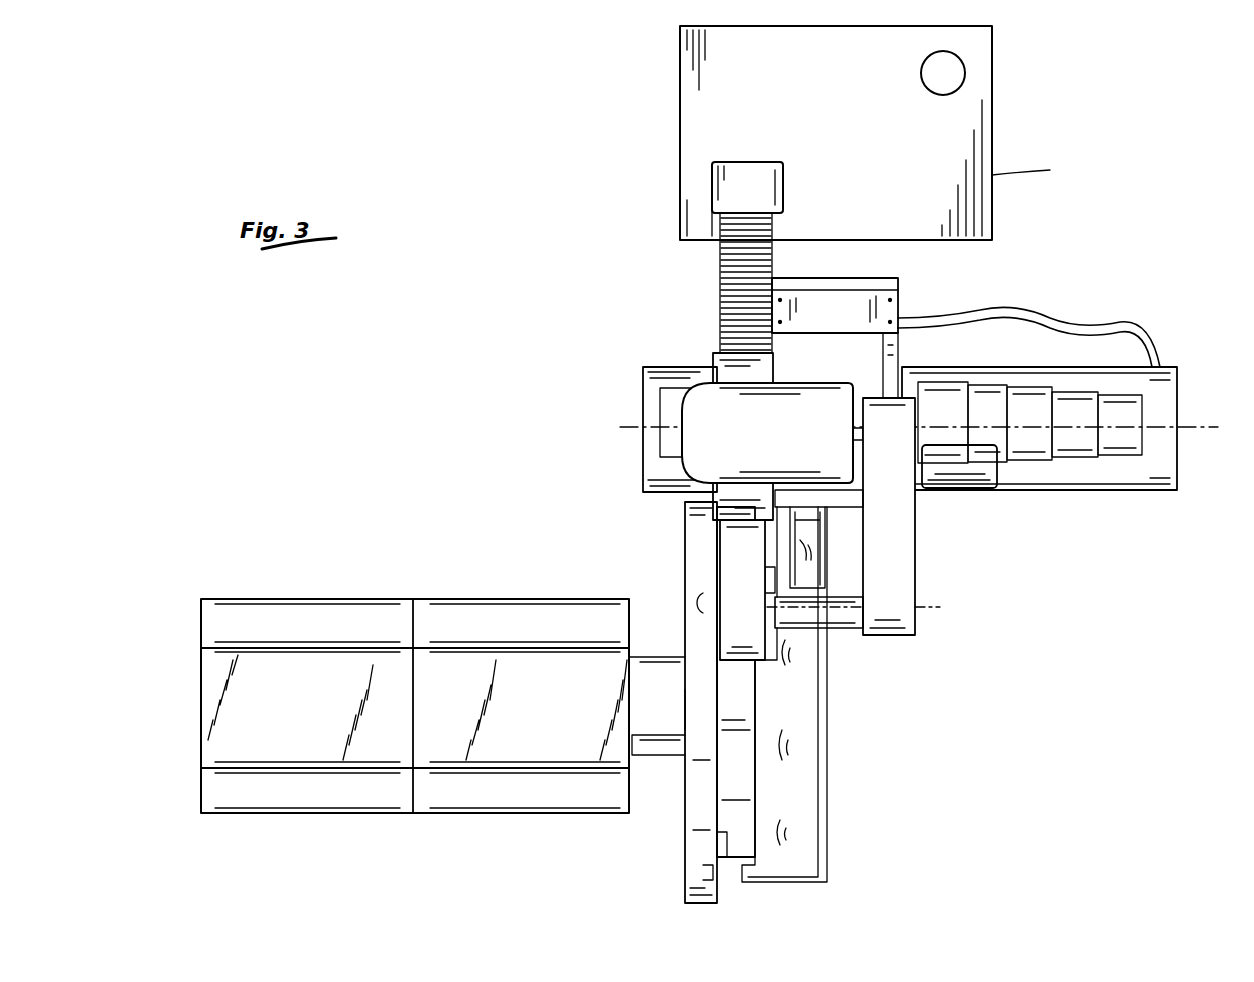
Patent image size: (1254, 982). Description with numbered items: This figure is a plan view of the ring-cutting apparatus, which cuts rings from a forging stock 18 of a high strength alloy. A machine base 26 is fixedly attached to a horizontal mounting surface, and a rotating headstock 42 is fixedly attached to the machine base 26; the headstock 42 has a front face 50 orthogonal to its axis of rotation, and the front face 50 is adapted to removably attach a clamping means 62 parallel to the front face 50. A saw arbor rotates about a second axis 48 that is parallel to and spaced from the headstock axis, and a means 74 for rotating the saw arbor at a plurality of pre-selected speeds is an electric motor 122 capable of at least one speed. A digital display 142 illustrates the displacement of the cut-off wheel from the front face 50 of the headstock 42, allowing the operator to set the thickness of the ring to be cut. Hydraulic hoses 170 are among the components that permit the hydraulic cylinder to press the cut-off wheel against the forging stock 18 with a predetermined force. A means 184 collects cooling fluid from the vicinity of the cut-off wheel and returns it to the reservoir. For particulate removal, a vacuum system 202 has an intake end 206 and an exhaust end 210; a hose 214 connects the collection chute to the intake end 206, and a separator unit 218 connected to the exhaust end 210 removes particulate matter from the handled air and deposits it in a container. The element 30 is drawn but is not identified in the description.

The forging stock 18 is at (745, 765).
The machine base 26 is at (595, 798).
The housing 30 is at (1200, 427).
The rotating headstock 42 is at (655, 660).
The second axis 48 is at (892, 607).
The front face 50 is at (685, 710).
The clamping means 62 is at (687, 840).
The means for rotating the saw arbor 74 is at (798, 441).
The electric motor 122 is at (745, 383).
The digital display 142 is at (990, 482).
The hoses 170 is at (1053, 317).
The means for collecting cooling fluid 184 is at (825, 807).
The vacuum system 202 is at (881, 133).
The intake end 206 is at (720, 178).
The exhaust end 210 is at (965, 73).
The hose 214 is at (720, 278).
The separator unit 218 is at (1044, 174).